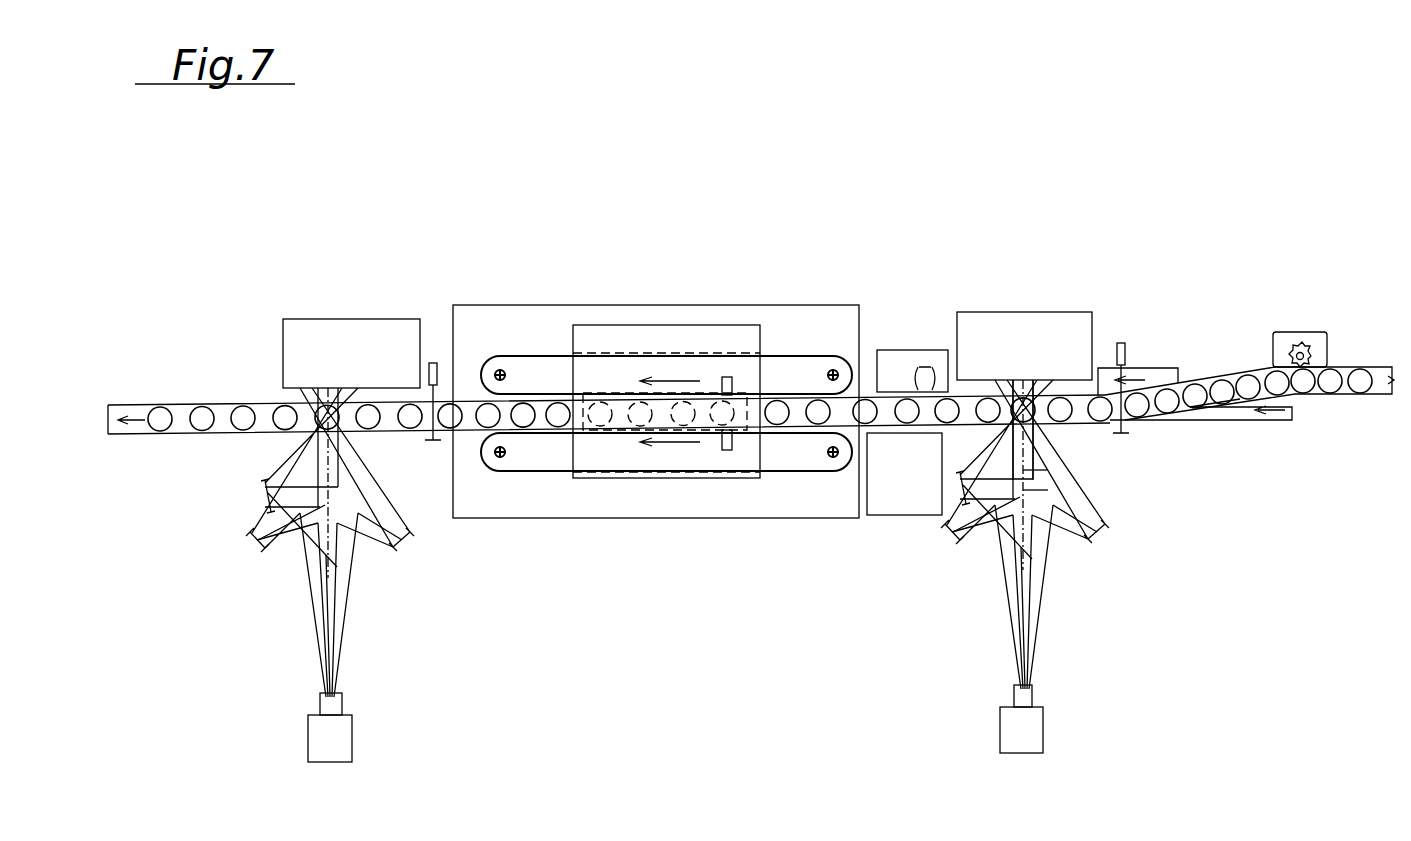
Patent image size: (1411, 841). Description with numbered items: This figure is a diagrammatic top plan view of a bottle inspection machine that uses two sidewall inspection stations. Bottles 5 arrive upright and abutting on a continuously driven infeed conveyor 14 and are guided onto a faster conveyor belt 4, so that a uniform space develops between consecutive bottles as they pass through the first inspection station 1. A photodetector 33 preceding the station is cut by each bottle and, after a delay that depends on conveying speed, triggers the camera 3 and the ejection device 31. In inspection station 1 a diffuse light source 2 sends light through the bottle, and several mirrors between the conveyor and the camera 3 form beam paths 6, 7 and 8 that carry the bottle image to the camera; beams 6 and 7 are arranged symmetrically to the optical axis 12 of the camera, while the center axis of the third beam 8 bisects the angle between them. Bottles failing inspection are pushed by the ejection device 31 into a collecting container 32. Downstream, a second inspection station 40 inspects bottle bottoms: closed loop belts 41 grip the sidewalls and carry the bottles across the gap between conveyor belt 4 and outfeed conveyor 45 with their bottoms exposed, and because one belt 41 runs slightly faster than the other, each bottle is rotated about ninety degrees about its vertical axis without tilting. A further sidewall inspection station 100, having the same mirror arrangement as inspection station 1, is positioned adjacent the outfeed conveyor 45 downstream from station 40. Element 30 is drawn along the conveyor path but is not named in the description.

The inspection station 1 is at (1059, 566).
The diffuse light source 2 is at (1007, 340).
The camera 3 is at (1025, 722).
The conveyor belt 4 is at (1290, 420).
The bottles 5 is at (1196, 392).
The beam path 6 is at (1045, 443).
The beam path 7 is at (1000, 440).
The third beam path 8 is at (1045, 492).
The optical axis 12 is at (1030, 468).
The infeed conveyor 14 is at (1344, 367).
The conveyor section 30 is at (1237, 372).
The ejection device 31 is at (930, 370).
The container 32 is at (900, 503).
The photodetector 33 is at (433, 363).
The second inspection station 40 is at (662, 545).
The endless belts 41 is at (536, 356).
The outfeed conveyor 45 is at (219, 413).
The second inspection station 100 is at (390, 605).